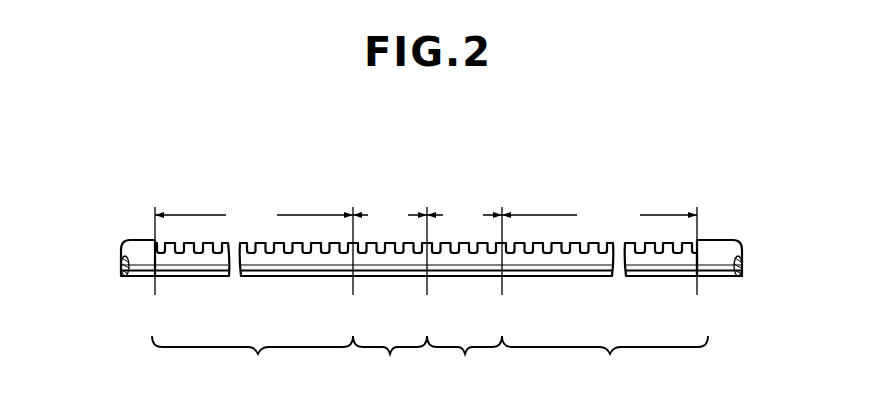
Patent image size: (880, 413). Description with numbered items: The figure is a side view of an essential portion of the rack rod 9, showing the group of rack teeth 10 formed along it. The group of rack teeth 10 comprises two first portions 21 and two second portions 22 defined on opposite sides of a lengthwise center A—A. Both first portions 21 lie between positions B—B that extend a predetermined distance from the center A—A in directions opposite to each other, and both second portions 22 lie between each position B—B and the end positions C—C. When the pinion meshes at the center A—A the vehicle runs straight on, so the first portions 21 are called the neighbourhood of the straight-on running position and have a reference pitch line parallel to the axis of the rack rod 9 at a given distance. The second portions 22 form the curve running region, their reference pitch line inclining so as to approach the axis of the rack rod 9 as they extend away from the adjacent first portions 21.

The rack rod 9 is at (132, 242).
The group of rack teeth 10 is at (705, 163).
The first portion 21 is at (427, 360).
The second portion 22 is at (430, 360).